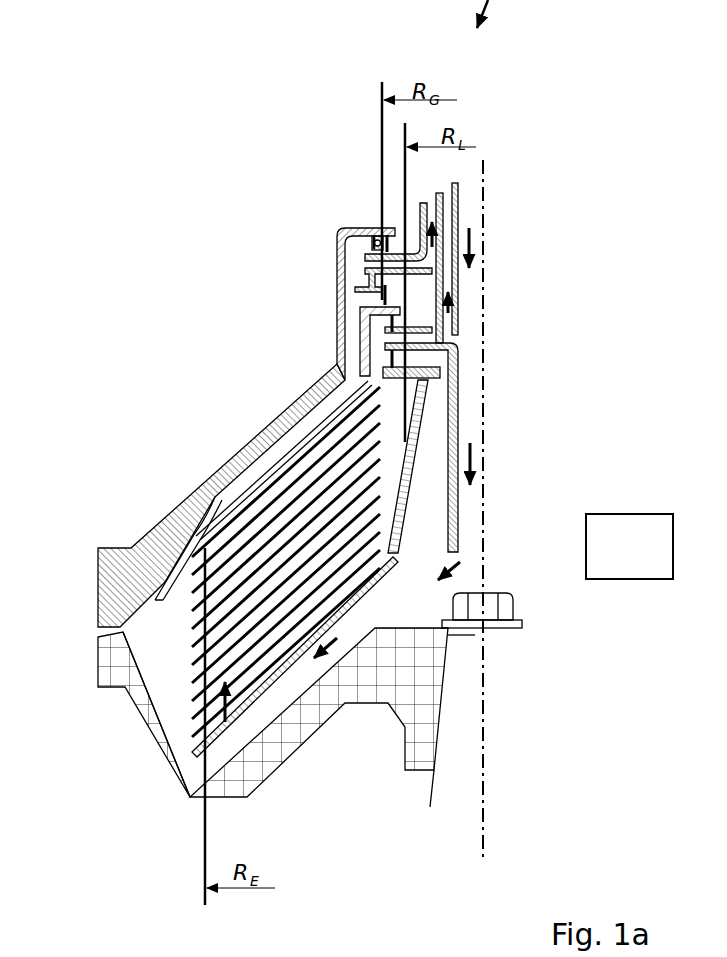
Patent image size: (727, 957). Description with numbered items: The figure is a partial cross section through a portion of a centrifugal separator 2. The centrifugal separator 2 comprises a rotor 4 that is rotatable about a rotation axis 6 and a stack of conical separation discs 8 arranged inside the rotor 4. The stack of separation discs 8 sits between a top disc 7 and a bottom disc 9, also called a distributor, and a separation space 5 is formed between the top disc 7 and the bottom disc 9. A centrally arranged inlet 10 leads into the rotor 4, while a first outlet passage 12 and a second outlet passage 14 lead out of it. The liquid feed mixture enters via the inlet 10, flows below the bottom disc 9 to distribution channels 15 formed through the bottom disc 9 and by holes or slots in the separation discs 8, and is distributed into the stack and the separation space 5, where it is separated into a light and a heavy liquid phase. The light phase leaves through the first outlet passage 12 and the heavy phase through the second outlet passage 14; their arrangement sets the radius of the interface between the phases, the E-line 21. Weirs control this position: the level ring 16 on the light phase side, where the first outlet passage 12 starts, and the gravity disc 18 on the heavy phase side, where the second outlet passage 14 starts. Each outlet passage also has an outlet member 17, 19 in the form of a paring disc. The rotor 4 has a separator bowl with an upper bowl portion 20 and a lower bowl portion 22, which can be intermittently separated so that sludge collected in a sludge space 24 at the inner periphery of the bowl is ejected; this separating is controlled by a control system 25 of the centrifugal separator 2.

The centrifugal separator 2 is at (329, 941).
The rotor 4 is at (219, 302).
The separation space 5 is at (260, 590).
The rotation axis 6 is at (484, 818).
The top disc 7 is at (262, 483).
The separation discs 8 is at (308, 472).
The bottom disc 9 is at (272, 680).
The inlet 10 is at (470, 212).
The first outlet passage 12 is at (423, 342).
The second outlet passage 14 is at (390, 262).
The distribution channels 15 is at (221, 524).
The level ring 16 is at (390, 372).
The outlet member 17 is at (393, 330).
The gravity disc 18 is at (360, 287).
The outlet member 19 is at (368, 255).
The upper bowl portion 20 is at (160, 528).
The E-line 21 is at (157, 700).
The lower bowl portion 22 is at (140, 698).
The sludge space 24 is at (170, 649).
The control system 25 is at (645, 561).